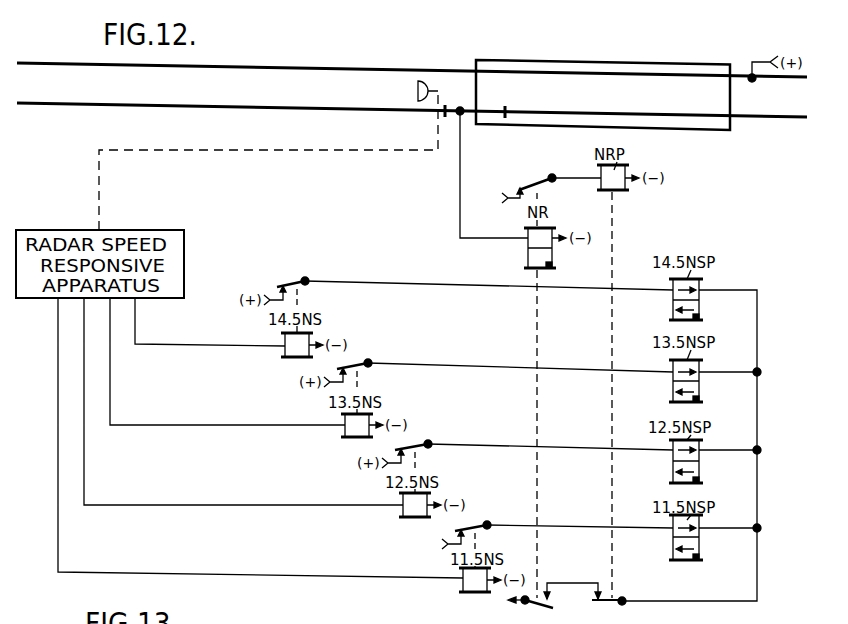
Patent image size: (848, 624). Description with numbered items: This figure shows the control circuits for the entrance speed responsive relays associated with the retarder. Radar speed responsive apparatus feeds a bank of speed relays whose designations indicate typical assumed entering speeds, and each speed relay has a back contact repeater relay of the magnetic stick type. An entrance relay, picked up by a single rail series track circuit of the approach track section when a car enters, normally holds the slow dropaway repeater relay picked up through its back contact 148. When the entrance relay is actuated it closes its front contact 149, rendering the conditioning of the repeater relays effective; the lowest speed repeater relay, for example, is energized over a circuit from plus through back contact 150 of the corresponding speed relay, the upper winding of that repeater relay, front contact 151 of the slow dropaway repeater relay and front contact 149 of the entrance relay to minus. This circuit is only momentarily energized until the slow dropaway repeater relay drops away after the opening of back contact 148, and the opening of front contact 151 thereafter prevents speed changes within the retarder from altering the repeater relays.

The back contact of relay NR 148 is at (540, 182).
The front contact of relay NR 149 is at (551, 606).
The back contact of relay 11.5NS 150 is at (474, 527).
The front contact of relay NRP 151 is at (606, 603).